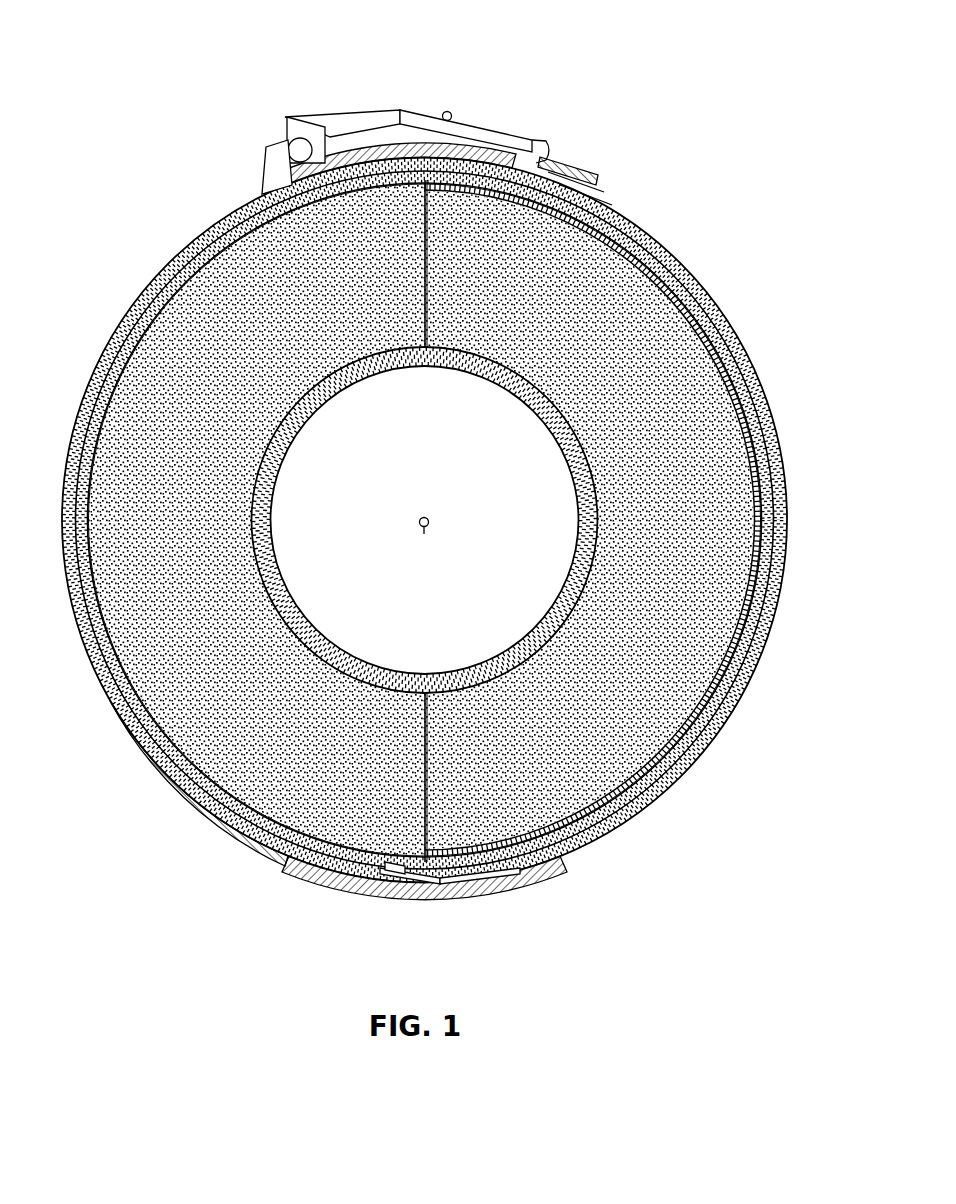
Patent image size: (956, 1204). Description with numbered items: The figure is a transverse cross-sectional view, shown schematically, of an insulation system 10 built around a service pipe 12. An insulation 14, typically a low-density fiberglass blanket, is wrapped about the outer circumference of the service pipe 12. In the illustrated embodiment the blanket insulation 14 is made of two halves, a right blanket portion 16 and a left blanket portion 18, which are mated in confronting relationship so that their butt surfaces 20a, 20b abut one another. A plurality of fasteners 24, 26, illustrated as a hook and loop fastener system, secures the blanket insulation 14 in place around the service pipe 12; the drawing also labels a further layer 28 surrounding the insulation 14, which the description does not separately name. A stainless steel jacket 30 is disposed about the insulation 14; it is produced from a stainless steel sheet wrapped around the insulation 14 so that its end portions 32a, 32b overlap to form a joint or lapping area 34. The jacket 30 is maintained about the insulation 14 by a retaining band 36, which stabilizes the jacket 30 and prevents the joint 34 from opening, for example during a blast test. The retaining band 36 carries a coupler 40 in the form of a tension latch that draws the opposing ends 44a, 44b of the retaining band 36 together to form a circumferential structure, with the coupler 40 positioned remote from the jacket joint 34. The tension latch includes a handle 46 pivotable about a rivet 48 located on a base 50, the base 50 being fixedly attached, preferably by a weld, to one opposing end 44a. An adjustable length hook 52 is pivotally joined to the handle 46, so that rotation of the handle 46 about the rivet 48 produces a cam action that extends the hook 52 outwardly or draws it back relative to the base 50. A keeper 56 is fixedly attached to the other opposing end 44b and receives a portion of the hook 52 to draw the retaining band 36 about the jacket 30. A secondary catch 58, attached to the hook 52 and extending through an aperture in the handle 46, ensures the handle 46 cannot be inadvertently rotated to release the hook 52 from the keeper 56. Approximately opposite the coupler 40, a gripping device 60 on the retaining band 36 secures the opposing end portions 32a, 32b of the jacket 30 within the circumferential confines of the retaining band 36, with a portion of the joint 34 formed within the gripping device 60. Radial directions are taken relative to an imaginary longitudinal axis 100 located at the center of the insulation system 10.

The insulation system 10 is at (226, 68).
The service pipe 12 is at (560, 600).
The insulation 14 is at (635, 298).
The right blanket portion 16 is at (170, 550).
The left blanket portion 18 is at (655, 550).
The butt surface 20a is at (423, 275).
The butt surface 20b is at (428, 248).
The fastener 24 is at (600, 193).
The fastener 26 is at (530, 858).
The inner band 28 is at (688, 366).
The stainless steel jacket 30 is at (776, 430).
The end portion 32a is at (478, 892).
The end portion 32b is at (408, 888).
The joint 34 is at (448, 893).
The retaining band 36 is at (287, 862).
The coupler 40 is at (378, 142).
The opposing end 44a is at (398, 150).
The opposing end 44b is at (495, 152).
The handle 46 is at (528, 143).
The rivet 48 is at (298, 150).
The base 50 is at (272, 182).
The hook 52 is at (548, 165).
The keeper 56 is at (568, 174).
The secondary catch 58 is at (450, 111).
The gripping device 60 is at (398, 880).
The longitudinal axis 100 is at (421, 536).